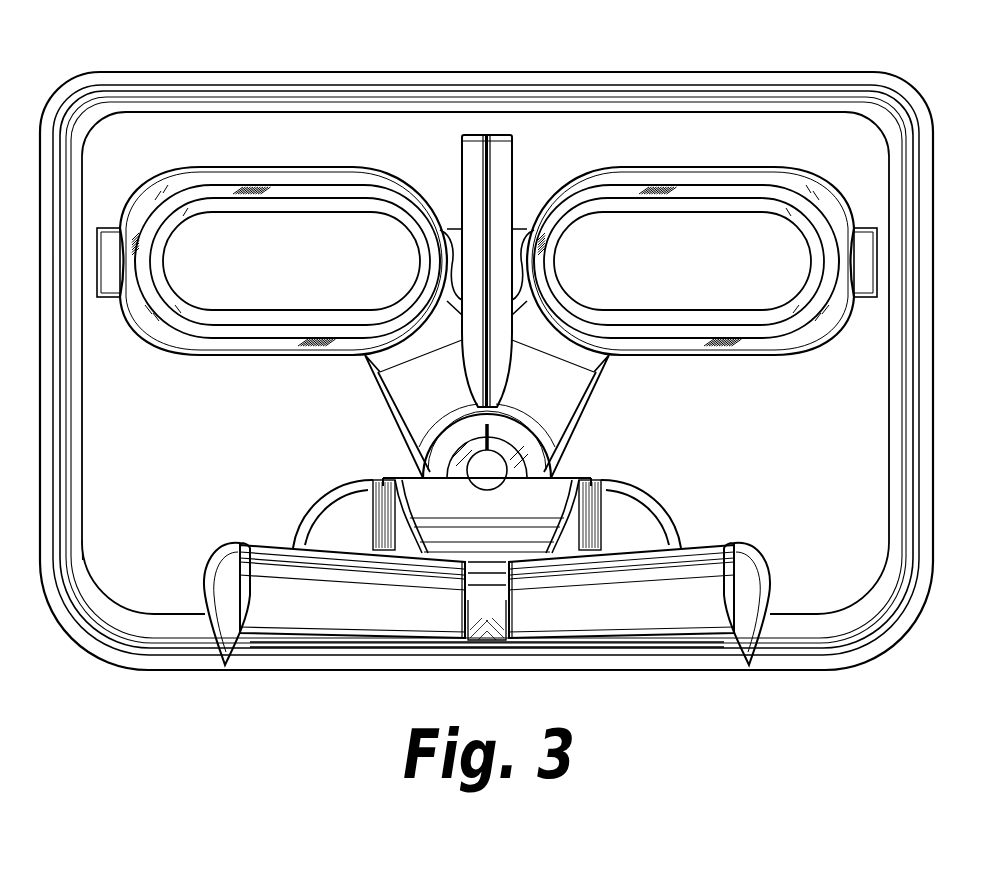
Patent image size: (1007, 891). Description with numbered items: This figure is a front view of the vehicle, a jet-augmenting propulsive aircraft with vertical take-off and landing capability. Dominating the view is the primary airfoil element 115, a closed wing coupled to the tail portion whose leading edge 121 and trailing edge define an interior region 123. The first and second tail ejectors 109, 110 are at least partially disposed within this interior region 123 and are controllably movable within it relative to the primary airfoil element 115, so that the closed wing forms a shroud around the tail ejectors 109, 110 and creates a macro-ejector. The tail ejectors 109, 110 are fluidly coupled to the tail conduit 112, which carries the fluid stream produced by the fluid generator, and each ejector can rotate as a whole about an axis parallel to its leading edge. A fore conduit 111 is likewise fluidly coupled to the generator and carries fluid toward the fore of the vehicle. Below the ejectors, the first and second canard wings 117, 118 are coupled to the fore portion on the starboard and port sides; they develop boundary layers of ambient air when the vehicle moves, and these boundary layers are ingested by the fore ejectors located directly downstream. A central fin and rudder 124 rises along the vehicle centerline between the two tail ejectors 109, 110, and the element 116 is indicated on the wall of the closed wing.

The first tail ejector 109 is at (248, 335).
The second tail ejector 110 is at (664, 335).
The fore conduit 111 is at (466, 459).
The tail conduit 112 is at (554, 389).
The primary airfoil element 115 is at (847, 627).
The tray inner wall 116 is at (883, 433).
The first canard wing 117 is at (357, 617).
The second canard wing 118 is at (643, 617).
The leading edge 121 is at (180, 59).
The interior region 123 is at (162, 525).
The central fin and rudder 124 is at (481, 173).